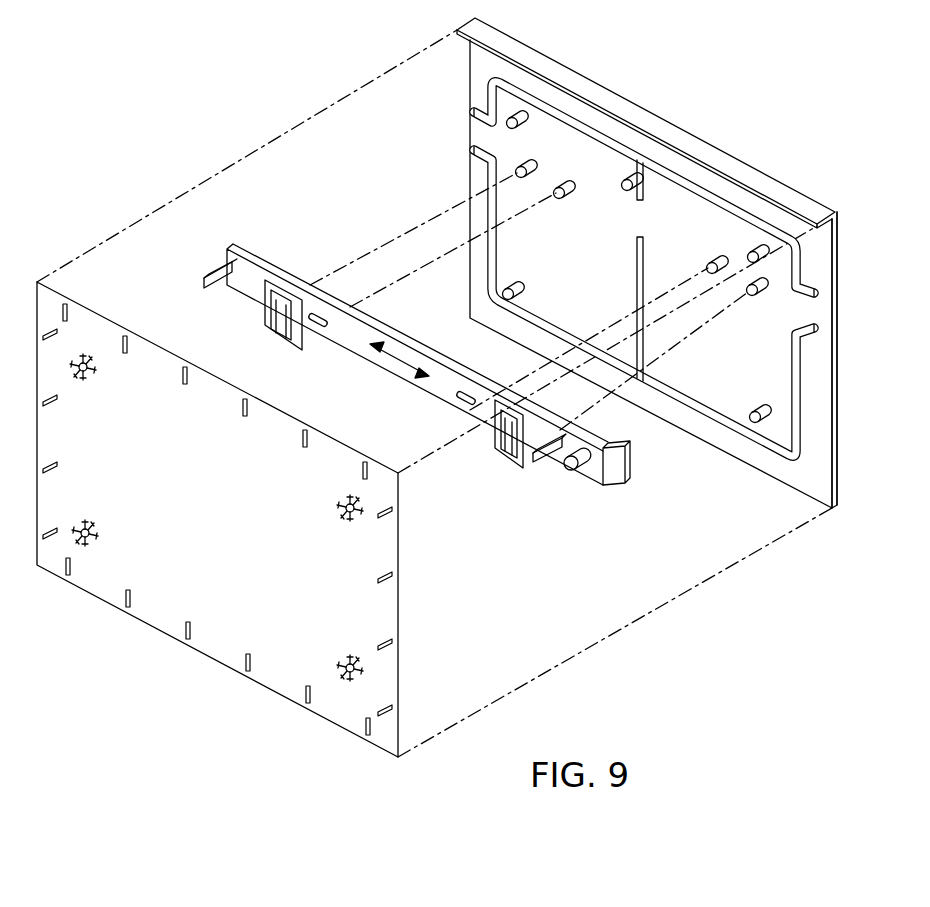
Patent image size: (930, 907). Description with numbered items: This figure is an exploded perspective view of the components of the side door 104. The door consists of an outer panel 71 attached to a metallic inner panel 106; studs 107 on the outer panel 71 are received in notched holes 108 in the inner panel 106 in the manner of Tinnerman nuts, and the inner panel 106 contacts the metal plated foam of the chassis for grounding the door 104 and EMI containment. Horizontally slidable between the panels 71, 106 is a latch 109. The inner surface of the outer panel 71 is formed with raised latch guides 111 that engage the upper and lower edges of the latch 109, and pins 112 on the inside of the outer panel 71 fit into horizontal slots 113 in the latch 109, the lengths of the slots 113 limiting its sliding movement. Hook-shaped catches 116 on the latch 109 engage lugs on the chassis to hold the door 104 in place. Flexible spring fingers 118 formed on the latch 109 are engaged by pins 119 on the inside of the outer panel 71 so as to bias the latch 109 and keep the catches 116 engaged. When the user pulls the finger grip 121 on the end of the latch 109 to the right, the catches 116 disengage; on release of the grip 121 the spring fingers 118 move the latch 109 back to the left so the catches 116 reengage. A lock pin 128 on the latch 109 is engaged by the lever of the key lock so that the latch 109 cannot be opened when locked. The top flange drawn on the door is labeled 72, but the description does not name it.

The side door 104 is at (666, 82).
The top flange 72 is at (800, 200).
The outer panel 71 is at (838, 372).
The inner panel 106 is at (231, 547).
The notched holes 108 is at (90, 376).
The studs 107 is at (521, 125).
The pins 119 is at (533, 165).
The pins 112 is at (569, 196).
The raised latch guides 111 is at (478, 148).
The latch 109 is at (430, 383).
The horizontal slots 113 is at (317, 326).
The flexible spring fingers 118 is at (267, 325).
The hook-shaped catches 116 is at (217, 273).
The finger grip 121 is at (613, 470).
The lock pin 128 is at (582, 470).